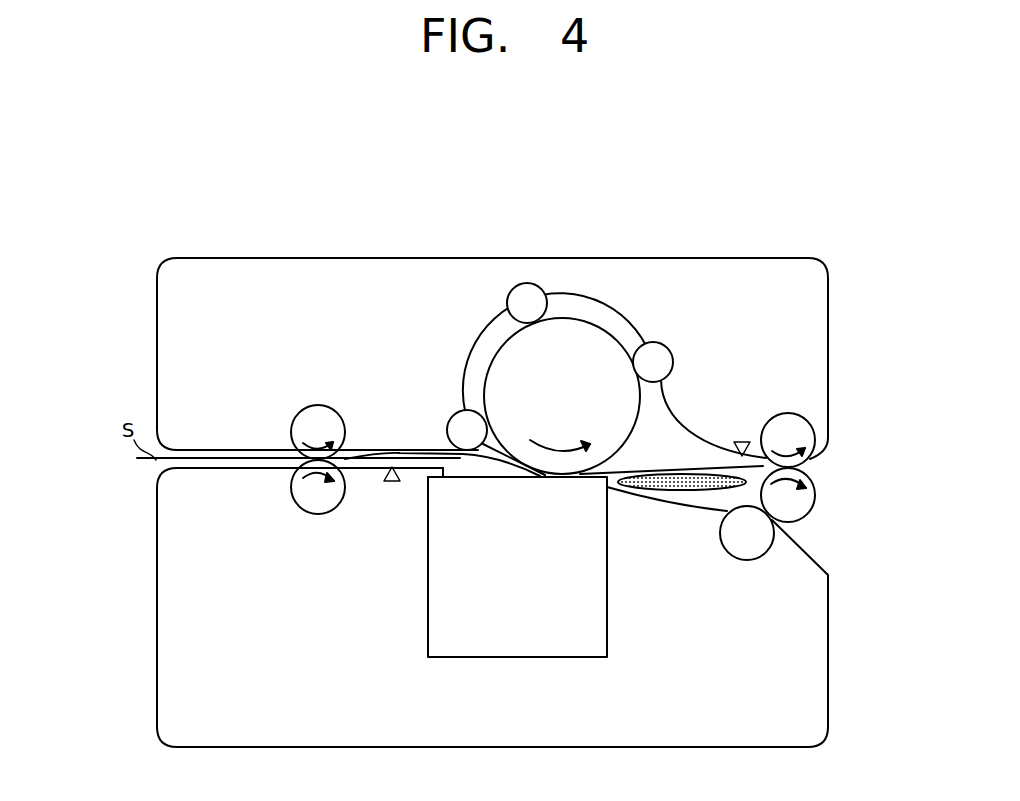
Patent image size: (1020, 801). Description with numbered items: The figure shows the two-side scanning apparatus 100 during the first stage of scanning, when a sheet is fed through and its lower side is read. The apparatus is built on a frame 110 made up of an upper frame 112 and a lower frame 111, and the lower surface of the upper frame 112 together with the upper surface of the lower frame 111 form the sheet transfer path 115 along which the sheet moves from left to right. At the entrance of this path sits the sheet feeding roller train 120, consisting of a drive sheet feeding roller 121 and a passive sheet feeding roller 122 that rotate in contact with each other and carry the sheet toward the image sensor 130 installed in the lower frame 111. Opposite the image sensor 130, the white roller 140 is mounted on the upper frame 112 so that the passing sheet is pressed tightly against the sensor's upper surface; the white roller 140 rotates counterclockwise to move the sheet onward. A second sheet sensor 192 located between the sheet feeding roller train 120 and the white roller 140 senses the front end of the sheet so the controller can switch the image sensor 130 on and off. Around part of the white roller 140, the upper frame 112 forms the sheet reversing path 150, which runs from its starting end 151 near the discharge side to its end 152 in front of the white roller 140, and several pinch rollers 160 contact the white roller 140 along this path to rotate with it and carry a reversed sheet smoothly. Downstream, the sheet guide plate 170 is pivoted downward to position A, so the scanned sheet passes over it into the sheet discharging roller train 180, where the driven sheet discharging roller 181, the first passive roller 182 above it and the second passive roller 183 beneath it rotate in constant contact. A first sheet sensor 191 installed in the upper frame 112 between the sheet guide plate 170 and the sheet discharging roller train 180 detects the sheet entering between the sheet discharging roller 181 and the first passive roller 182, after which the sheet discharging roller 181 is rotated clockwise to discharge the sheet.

The two-side scanning apparatus 100 is at (846, 206).
The frame 110 is at (95, 353).
The lower frame 111 is at (157, 547).
The upper frame 112 is at (157, 370).
The sheet transfer path 115 is at (204, 456).
The sheet feeding roller train 120 is at (285, 490).
The drive sheet feeding roller 121 is at (315, 503).
The passive sheet feeding roller 122 is at (316, 412).
The image sensor 130 is at (608, 638).
The white roller 140 is at (586, 338).
The sheet reversing path 150 is at (486, 343).
The starting end of the sheet reversing path 151 is at (672, 432).
The end of the sheet reversing path 152 is at (468, 452).
The pinch rollers 160 is at (529, 283).
The sheet guide plate 170 is at (692, 484).
The sheet discharging roller train 180 is at (826, 455).
The sheet discharging roller 181 is at (812, 498).
The first passive roller 182 is at (800, 414).
The second passive roller 183 is at (772, 546).
The first sheet sensor 191 is at (742, 442).
The second sheet sensor 192 is at (392, 481).